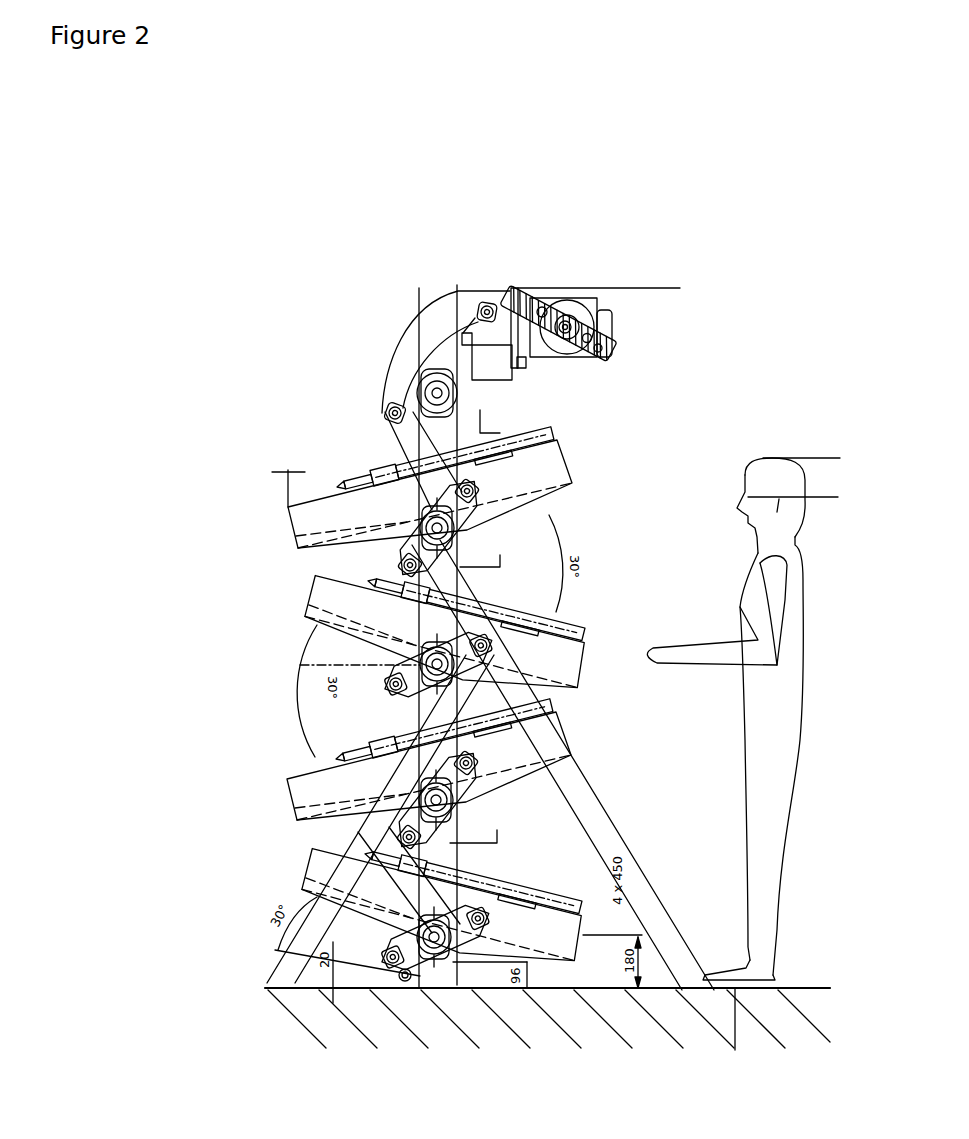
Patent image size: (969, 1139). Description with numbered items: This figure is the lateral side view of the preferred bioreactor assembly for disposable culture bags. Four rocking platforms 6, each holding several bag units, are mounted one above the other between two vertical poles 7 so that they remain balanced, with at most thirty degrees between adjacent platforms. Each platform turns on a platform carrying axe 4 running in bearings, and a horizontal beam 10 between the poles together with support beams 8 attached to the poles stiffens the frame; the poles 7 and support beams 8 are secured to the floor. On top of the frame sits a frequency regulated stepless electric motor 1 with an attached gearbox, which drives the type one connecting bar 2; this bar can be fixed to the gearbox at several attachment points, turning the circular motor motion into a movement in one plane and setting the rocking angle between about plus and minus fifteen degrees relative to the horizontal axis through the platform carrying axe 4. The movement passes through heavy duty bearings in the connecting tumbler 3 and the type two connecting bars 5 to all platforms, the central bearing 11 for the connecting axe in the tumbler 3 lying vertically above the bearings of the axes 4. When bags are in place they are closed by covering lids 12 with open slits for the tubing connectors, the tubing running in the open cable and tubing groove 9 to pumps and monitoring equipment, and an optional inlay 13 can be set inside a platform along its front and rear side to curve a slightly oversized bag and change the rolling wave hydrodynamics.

The stepless electric motor 1 is at (614, 325).
The type one connecting bar 2 is at (623, 294).
The connecting tumbler 3 is at (415, 333).
The platform carrying axe running in bearings 4 is at (470, 529).
The type two connecting bar 5 is at (410, 437).
The rocking platform 6 is at (435, 729).
The vertical pole 7 is at (498, 687).
The support beam 8 is at (330, 937).
The open cable and tubing groove 9 is at (480, 410).
The horizontal support beam 10 is at (487, 362).
The bearings for connecting axe 11 is at (470, 391).
The covering lid 12 is at (487, 588).
The inlay (optional) 13 is at (306, 614).